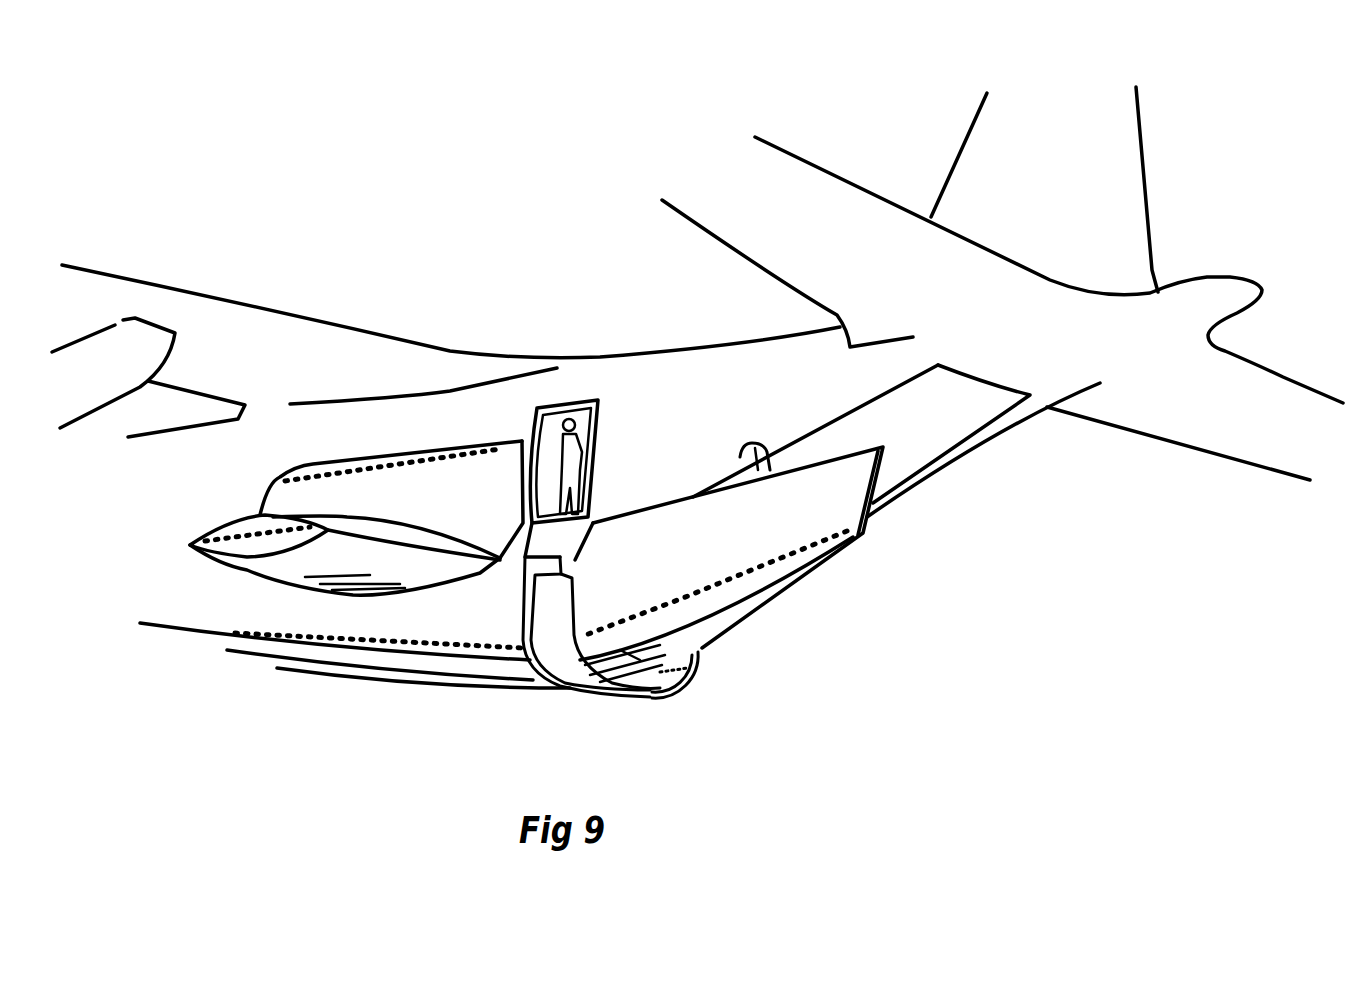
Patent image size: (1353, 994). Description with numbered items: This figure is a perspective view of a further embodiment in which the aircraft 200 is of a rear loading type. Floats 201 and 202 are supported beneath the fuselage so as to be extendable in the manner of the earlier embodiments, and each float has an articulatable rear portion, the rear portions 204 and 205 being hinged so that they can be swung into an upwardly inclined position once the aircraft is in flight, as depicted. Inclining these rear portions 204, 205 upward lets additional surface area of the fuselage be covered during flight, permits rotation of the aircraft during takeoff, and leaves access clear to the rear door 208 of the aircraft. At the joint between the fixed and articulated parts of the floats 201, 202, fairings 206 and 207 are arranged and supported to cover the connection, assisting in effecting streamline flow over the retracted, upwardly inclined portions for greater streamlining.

The aircraft 200 is at (598, 388).
The float 201 is at (360, 627).
The float 202 is at (405, 677).
The rear portion 204 is at (647, 630).
The rear portion 205 is at (767, 603).
The fairing 206 is at (600, 690).
The fairing 207 is at (697, 670).
The rear door 208 is at (740, 453).